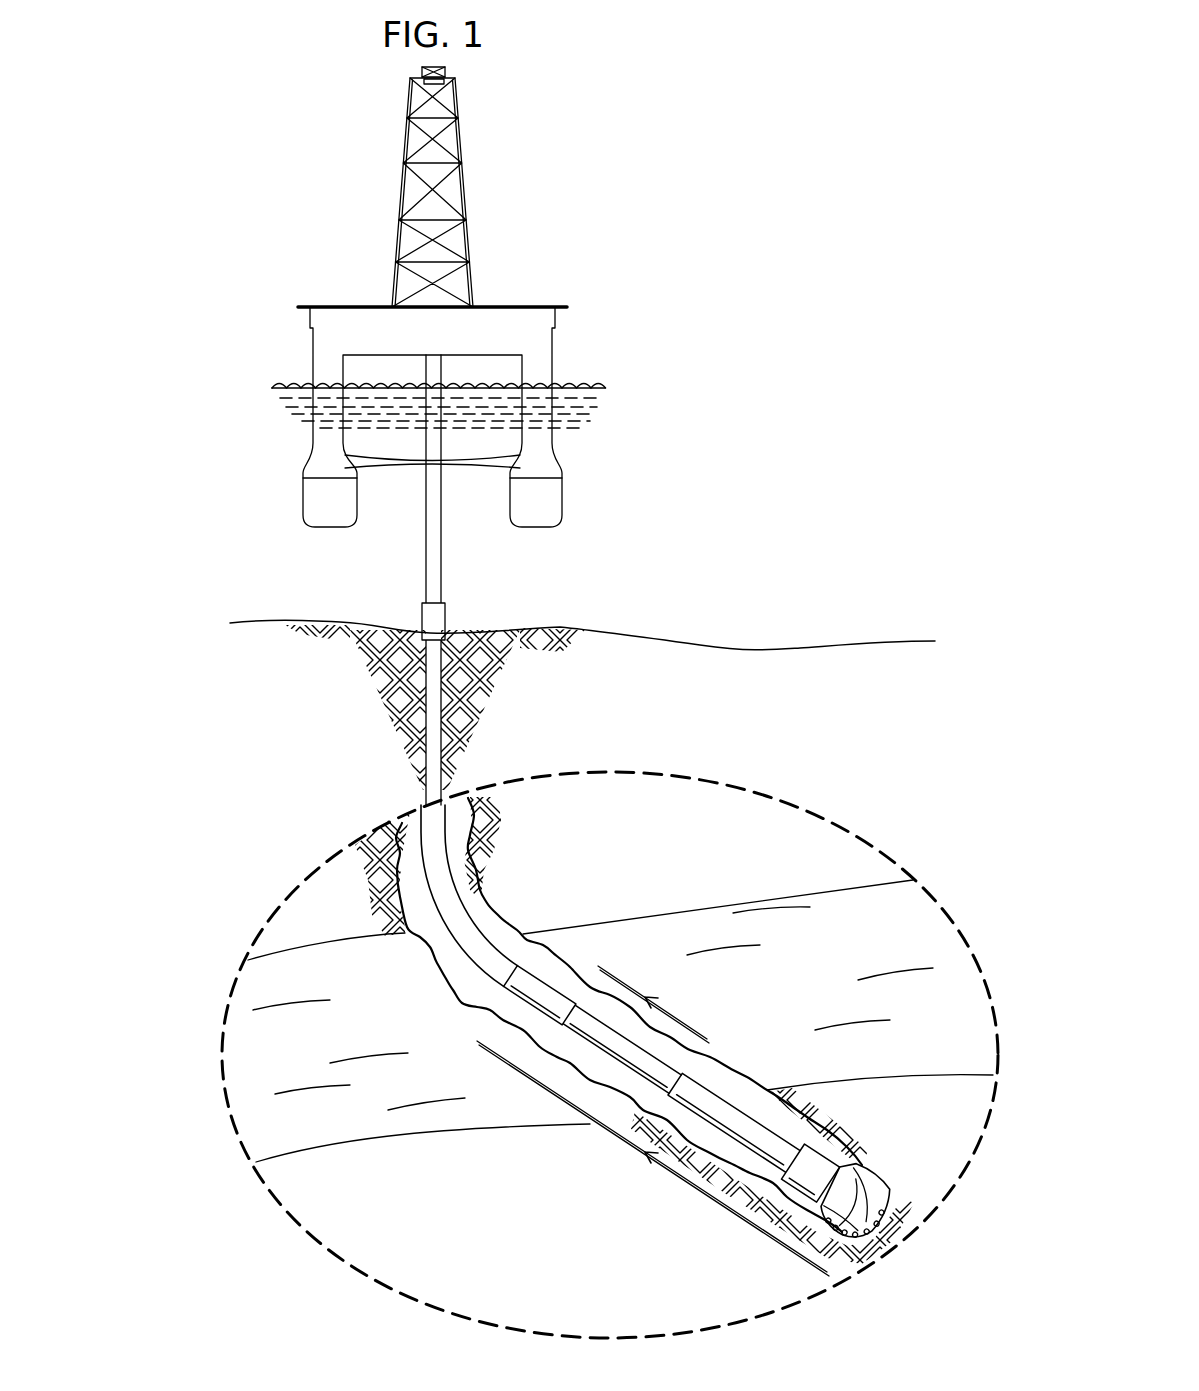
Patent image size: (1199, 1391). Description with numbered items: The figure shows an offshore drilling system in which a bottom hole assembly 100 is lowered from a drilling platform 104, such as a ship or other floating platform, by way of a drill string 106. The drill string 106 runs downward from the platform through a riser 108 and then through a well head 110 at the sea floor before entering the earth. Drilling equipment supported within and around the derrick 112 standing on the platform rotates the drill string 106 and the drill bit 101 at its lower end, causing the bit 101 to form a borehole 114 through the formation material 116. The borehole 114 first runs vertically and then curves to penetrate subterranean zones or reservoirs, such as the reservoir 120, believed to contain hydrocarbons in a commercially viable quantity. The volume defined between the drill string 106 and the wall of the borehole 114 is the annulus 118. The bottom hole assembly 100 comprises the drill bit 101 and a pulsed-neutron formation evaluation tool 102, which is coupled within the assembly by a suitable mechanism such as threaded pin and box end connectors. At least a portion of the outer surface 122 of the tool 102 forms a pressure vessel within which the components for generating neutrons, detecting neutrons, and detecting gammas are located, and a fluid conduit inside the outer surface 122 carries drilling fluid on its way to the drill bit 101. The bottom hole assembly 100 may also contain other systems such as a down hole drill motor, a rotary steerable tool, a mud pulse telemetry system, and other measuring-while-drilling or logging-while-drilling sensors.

The bottom hole assembly 100 is at (653, 1158).
The drill bit 101 is at (862, 1174).
The pulsed-neutron formation evaluation tool 102 is at (653, 1004).
The drilling platform 104 is at (548, 306).
The drill string 106 is at (485, 985).
The riser 108 is at (426, 568).
The well head 110 is at (422, 615).
The derrick 112 is at (464, 194).
The borehole 114 is at (500, 920).
The formation material 116 is at (519, 825).
The annulus 118 is at (455, 971).
The reservoir 120 is at (835, 975).
The outer surface 122 is at (712, 1092).